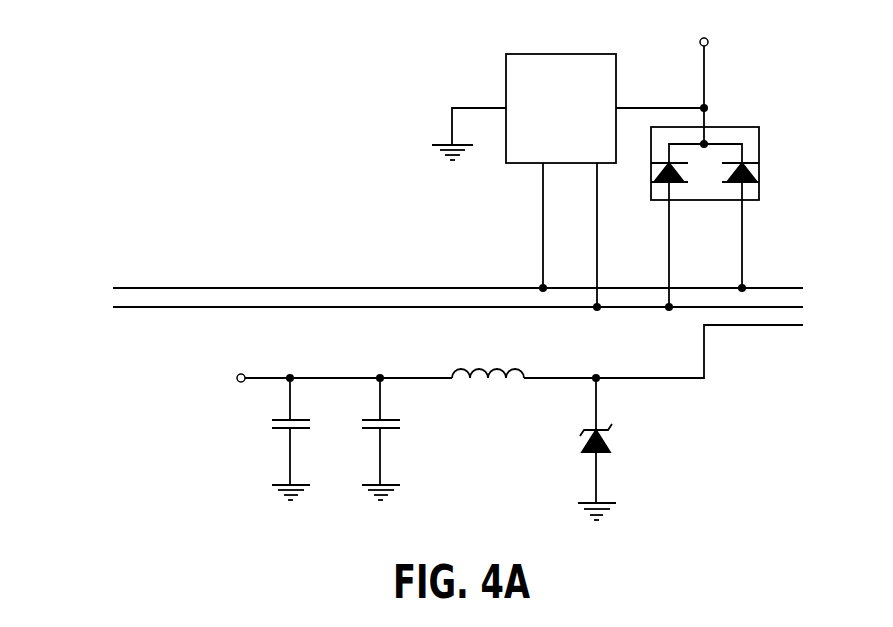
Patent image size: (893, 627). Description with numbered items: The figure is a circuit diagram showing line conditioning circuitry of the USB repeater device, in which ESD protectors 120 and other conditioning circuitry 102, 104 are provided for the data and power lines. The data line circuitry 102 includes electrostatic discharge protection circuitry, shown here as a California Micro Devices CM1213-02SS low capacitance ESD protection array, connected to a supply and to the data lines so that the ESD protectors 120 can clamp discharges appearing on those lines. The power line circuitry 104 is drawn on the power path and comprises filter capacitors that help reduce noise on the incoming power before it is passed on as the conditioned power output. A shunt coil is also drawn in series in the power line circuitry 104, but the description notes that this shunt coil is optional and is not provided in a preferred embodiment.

The ESD protectors 120 is at (155, 70).
The data line circuitry 102 is at (472, 65).
The power line circuitry 104 is at (248, 428).